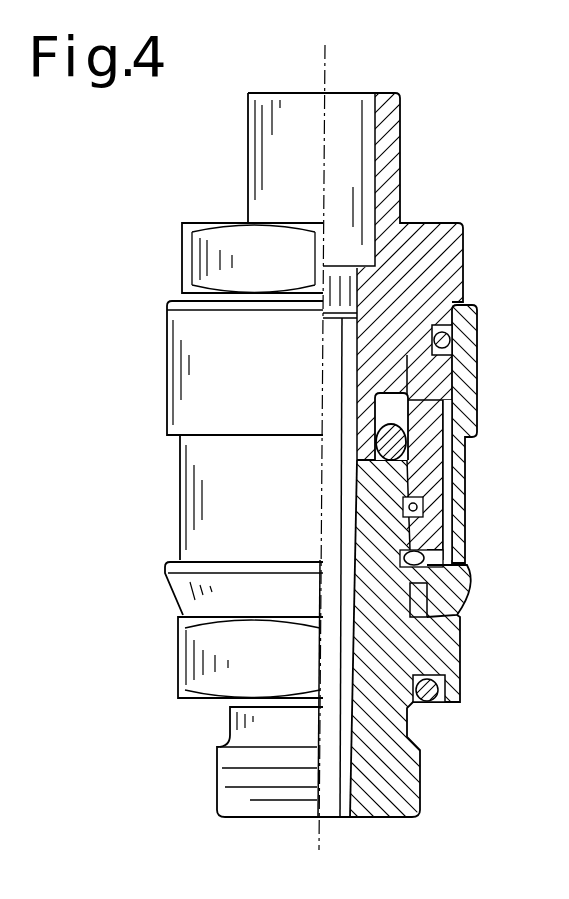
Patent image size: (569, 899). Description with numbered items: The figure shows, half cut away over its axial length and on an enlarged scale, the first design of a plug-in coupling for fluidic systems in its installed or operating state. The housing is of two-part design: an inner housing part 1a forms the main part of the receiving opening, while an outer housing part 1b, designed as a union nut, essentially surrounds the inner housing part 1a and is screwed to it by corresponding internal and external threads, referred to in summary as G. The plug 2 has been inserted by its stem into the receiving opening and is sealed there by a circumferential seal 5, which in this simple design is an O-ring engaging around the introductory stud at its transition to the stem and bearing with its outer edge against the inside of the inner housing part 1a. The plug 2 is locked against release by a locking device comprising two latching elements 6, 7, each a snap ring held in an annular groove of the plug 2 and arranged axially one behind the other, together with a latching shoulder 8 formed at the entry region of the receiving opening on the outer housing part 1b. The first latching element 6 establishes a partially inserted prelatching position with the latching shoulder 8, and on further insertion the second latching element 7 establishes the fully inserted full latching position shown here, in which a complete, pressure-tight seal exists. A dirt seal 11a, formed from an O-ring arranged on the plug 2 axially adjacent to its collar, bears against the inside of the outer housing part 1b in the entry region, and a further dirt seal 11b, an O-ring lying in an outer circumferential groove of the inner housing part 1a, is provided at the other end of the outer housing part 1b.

The inner housing part 1a is at (420, 252).
The outer housing part 1b is at (480, 377).
The plug 2 is at (393, 787).
The circumferential seal 5 is at (412, 435).
The internal and external threads G is at (450, 474).
The first latching element 6 is at (423, 506).
The second latching element 7 is at (430, 543).
The latching shoulder 8 is at (473, 578).
The dirt seal 11a is at (428, 613).
The further dirt seal 11b is at (452, 345).